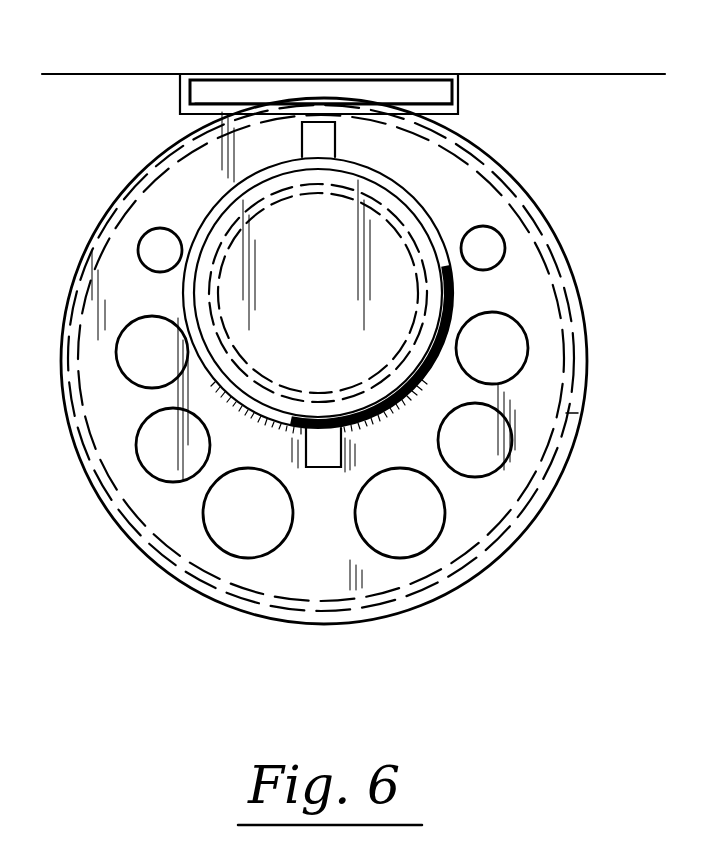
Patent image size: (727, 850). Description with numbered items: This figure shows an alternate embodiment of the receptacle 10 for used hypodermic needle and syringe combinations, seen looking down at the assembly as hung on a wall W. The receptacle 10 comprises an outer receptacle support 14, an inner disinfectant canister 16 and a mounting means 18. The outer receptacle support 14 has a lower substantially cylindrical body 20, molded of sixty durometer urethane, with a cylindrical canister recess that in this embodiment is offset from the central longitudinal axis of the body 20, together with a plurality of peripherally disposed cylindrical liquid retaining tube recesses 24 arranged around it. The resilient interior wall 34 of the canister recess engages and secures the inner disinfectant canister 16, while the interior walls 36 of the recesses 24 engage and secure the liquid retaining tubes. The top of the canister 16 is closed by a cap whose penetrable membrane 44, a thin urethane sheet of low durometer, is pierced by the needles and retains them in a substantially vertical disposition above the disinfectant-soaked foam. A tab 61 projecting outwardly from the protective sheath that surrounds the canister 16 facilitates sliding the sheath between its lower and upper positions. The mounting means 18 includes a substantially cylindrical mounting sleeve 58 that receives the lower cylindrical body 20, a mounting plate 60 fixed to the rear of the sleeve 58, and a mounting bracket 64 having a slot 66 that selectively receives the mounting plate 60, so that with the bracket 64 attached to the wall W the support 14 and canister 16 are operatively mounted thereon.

The receptacle 10 is at (497, 645).
The outer receptacle support 14 is at (570, 237).
The inner disinfectant canister 16 is at (203, 217).
The mounting means 18 is at (520, 160).
The lower substantially cylindrical body 20 is at (160, 502).
The liquid retaining tube recesses 24 is at (514, 348).
The interior wall of the canister recess 34 is at (425, 282).
The interior walls of the liquid tube recesses 36 is at (448, 515).
The penetrable membrane 44 is at (330, 310).
The substantially cylindrical mounting sleeve 58 is at (593, 417).
The mounting plate 60 is at (405, 92).
The tab 61 is at (327, 137).
The mounting bracket 64 is at (452, 95).
The slot 66 is at (218, 88).
The wall W is at (613, 73).